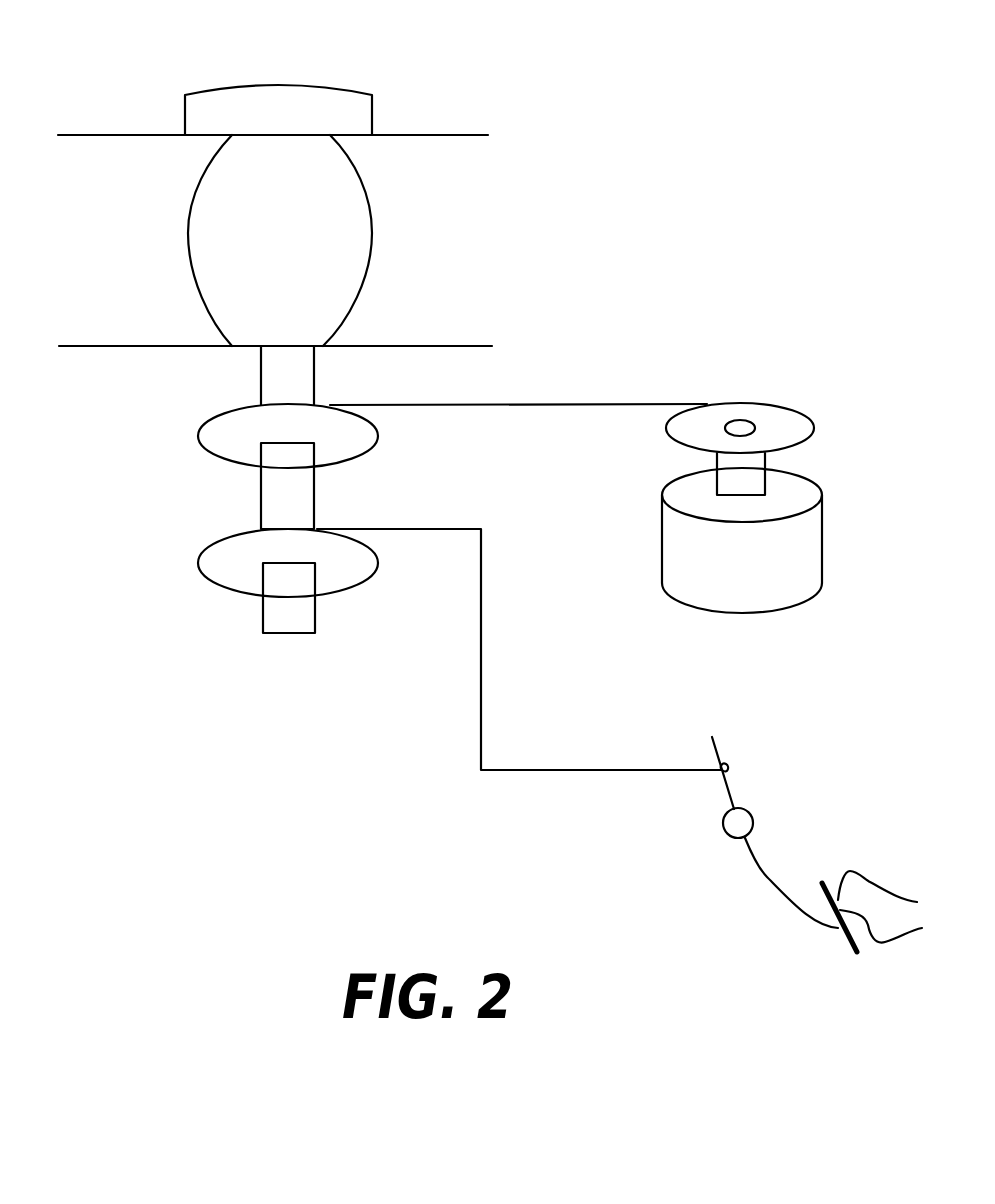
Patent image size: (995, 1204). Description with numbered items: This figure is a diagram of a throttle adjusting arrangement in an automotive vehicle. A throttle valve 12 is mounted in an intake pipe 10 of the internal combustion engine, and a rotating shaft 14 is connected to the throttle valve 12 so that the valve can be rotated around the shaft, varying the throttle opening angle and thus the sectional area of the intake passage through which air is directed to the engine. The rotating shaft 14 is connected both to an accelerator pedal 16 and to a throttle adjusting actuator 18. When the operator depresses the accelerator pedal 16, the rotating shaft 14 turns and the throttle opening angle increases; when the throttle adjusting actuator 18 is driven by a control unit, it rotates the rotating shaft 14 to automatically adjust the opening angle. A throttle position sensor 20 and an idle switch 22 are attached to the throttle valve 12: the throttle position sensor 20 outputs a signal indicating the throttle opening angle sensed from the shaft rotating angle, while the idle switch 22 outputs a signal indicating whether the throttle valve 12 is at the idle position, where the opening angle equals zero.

The intake pipe 10 is at (118, 155).
The throttle valve 12 is at (352, 230).
The rotating shaft 14 is at (260, 611).
The accelerator pedal 16 is at (767, 877).
The throttle adjusting actuator 18 is at (772, 402).
The throttle position sensor 20 is at (345, 71).
The idle switch 22 is at (363, 107).